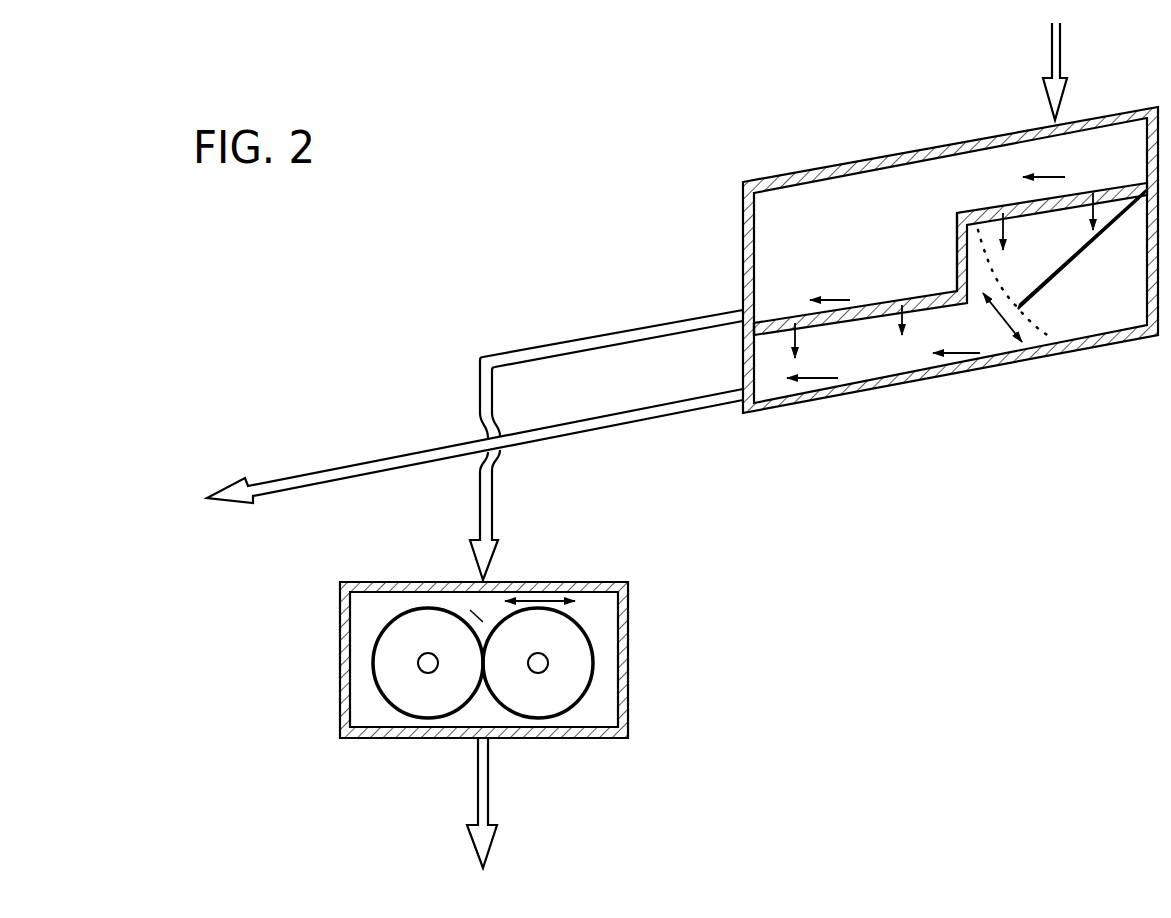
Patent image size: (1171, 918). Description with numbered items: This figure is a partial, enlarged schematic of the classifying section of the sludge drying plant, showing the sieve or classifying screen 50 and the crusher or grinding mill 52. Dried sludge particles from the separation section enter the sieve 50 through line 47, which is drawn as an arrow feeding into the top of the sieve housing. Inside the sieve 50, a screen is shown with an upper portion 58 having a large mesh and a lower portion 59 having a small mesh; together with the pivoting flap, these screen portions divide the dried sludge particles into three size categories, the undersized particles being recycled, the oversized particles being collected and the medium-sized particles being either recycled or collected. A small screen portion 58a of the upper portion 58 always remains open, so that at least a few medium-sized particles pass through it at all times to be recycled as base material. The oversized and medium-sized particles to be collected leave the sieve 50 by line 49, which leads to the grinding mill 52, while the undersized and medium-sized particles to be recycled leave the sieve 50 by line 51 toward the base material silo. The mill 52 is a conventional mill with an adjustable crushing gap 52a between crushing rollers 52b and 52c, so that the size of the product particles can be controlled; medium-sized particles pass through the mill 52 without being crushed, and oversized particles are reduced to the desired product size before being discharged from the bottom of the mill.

The line 47 is at (1050, 50).
The sieve or classifying screen 50 is at (740, 178).
The upper portion of screen 58 is at (1097, 183).
The small screen portion 58a is at (968, 216).
The lower portion of screen 59 is at (770, 323).
The line 49 is at (623, 327).
The line 51 is at (388, 452).
The crusher or grinding mill 52 is at (338, 655).
The crushing gap 52a is at (474, 620).
The crushing roller 52b is at (382, 697).
The crushing roller 52c is at (593, 687).